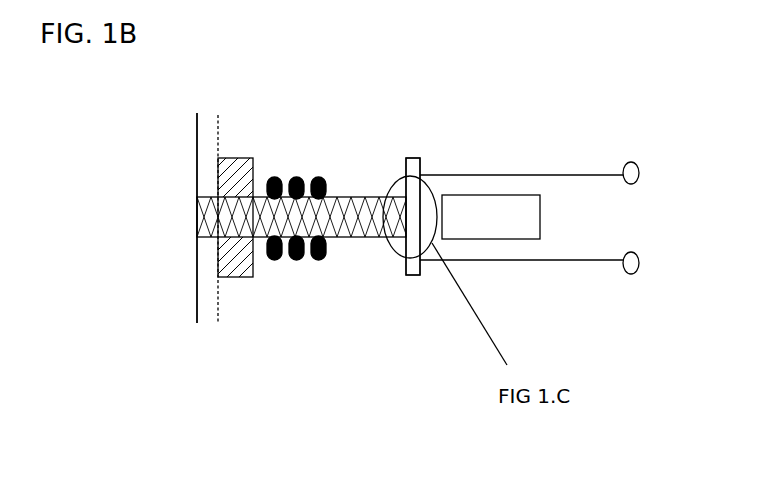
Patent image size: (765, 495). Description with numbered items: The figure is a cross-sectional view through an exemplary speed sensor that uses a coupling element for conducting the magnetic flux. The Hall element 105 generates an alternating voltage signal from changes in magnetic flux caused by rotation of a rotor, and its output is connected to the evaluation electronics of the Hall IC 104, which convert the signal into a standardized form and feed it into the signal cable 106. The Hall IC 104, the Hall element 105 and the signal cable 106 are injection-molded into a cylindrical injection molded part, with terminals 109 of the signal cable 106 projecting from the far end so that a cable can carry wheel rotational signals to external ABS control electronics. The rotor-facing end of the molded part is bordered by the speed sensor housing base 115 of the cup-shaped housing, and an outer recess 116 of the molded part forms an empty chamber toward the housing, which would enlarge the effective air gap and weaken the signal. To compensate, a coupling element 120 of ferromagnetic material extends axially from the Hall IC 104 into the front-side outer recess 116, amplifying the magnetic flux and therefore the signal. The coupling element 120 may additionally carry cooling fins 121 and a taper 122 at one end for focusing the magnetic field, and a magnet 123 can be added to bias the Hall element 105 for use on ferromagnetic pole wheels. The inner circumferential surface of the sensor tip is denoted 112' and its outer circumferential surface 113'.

The Hall IC 104 is at (420, 158).
The Hall element 105 is at (410, 176).
The signal cable 106 is at (550, 175).
The terminals 109 is at (640, 168).
The inner circumferential surface of the sensor tip 112' is at (180, 293).
The outer circumferential surface of the sensor tip 113' is at (140, 330).
The speed sensor housing base 115 is at (197, 133).
The outer recess 116 is at (242, 260).
The coupling element 120 is at (203, 212).
The cooling fins 121 is at (297, 253).
The taper 122 is at (396, 182).
The magnet 123 is at (498, 195).